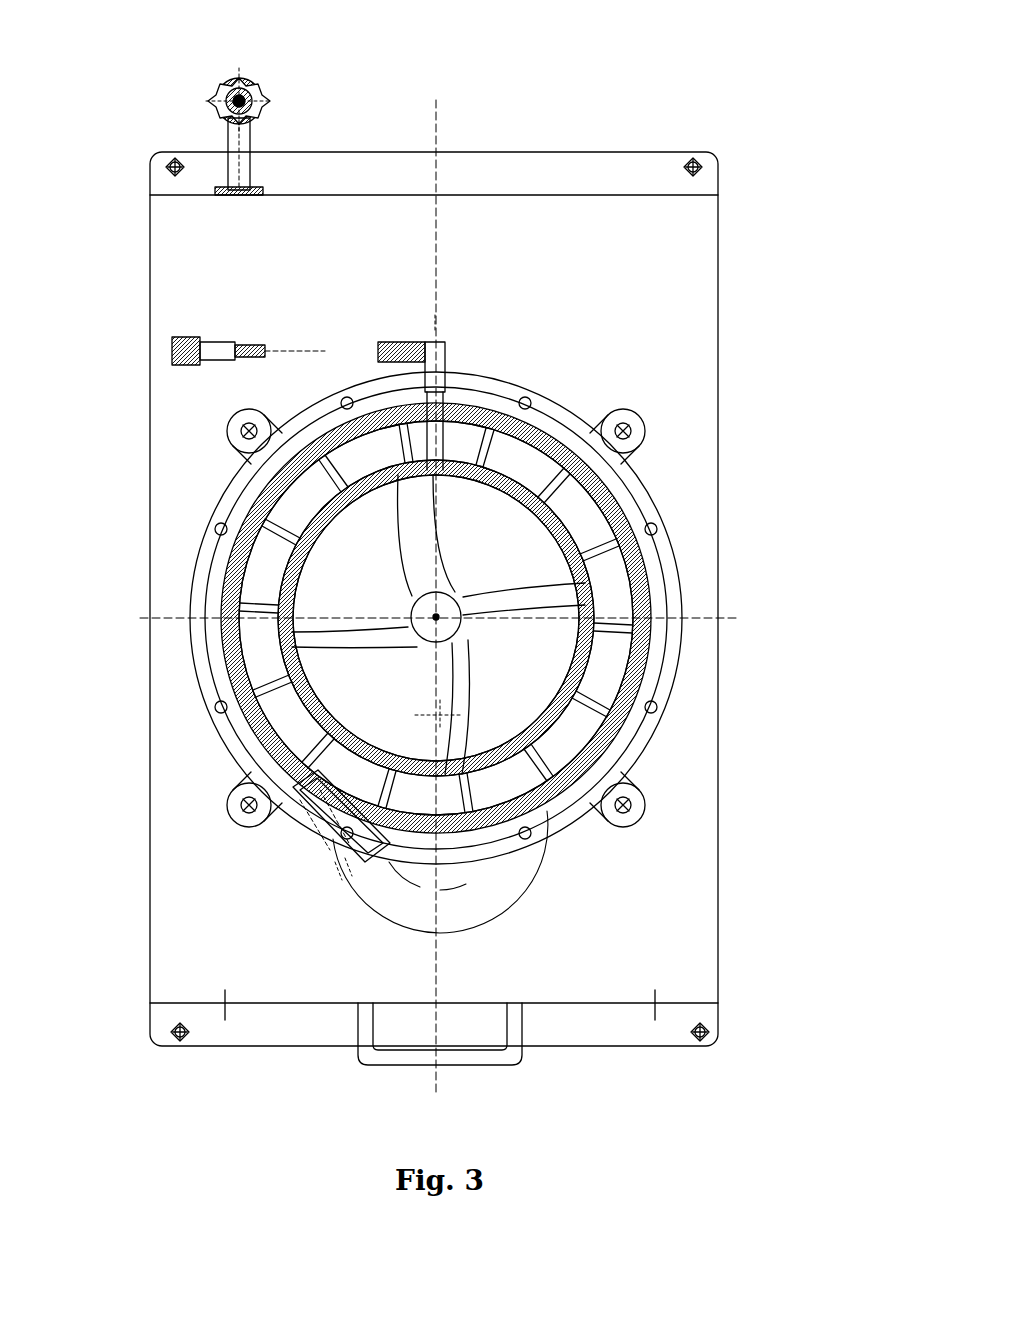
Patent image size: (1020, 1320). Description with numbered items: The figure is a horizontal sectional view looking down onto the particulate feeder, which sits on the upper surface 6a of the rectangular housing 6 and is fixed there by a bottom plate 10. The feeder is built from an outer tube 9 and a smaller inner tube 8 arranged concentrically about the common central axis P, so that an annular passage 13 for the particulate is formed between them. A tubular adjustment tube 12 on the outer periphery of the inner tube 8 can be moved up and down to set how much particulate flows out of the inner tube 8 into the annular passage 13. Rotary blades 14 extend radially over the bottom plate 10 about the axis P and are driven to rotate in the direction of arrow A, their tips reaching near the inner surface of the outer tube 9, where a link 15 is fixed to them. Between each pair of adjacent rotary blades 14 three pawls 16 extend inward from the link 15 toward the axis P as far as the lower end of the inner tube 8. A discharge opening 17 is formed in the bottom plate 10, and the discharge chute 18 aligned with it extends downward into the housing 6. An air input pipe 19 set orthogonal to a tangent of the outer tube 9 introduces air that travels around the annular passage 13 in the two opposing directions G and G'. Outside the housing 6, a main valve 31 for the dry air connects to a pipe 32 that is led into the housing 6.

The housing 6 is at (716, 303).
The upper surface 6a is at (684, 260).
The inner tube 8 is at (436, 618).
The outer tube 9 is at (603, 497).
The bottom plate 10 is at (568, 658).
The adjustment tube 12 is at (268, 512).
The annular passage 13 is at (608, 575).
The rotary blades 14 is at (328, 632).
The link 15 is at (257, 680).
The pawls 16 is at (346, 472).
The discharge opening 17 is at (460, 800).
The discharge chute 18 is at (460, 895).
The air input pipe 19 is at (447, 388).
The main valve 31 is at (253, 87).
The pipe 32 is at (252, 172).
The arrow A is at (530, 700).
The arrow G is at (344, 411).
The arrow G' is at (547, 410).
The central axis P is at (440, 612).